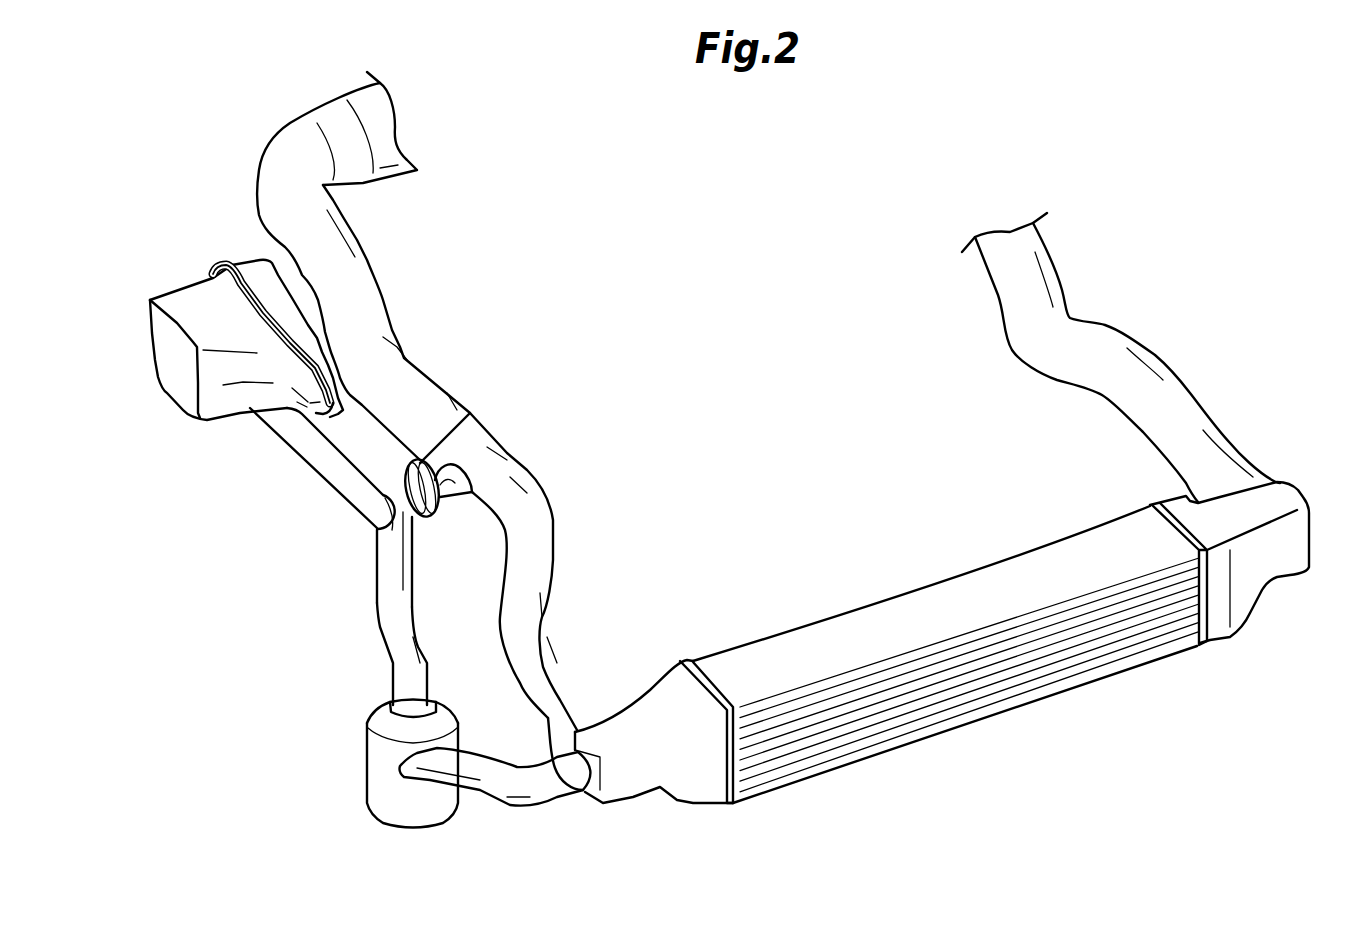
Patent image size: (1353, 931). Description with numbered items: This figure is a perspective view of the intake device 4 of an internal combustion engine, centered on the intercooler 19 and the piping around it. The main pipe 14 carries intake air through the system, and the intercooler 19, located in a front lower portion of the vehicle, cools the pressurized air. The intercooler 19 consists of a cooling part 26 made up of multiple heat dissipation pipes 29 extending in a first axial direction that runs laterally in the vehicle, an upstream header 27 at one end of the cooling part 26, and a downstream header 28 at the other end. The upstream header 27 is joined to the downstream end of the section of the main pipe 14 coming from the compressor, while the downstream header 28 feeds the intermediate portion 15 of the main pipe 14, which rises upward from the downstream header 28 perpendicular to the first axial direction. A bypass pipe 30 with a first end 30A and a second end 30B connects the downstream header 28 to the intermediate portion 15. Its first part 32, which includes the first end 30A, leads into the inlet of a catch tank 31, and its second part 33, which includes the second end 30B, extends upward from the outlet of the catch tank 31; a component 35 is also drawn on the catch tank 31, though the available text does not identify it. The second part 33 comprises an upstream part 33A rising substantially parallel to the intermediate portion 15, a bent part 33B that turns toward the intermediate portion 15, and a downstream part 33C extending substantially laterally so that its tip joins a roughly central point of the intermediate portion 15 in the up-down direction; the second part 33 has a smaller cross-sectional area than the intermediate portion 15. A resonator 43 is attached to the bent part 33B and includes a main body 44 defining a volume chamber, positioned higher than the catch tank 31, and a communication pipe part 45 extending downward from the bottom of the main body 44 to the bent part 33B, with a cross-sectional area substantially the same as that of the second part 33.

The intake device 4 is at (746, 361).
The main pipe 14 is at (1159, 322).
The intermediate portion 15 is at (543, 613).
The intercooler 19 is at (946, 534).
The cooling part 26 is at (897, 610).
The upstream header 27 is at (693, 790).
The downstream header 28 is at (1293, 560).
The heat dissipation pipes 29 is at (983, 703).
The bypass pipe 30 is at (253, 656).
The first end 30A is at (550, 735).
The second end 30B is at (440, 493).
The catch tank 31 is at (349, 710).
The first part 32 is at (545, 800).
The second part 33 is at (351, 592).
The upstream part 33A is at (397, 632).
The bent part 33B is at (417, 523).
The downstream part 33C is at (460, 497).
The tank body 35 is at (378, 780).
The resonator 43 is at (138, 315).
The main body 44 is at (193, 290).
The communication pipe part 45 is at (297, 438).